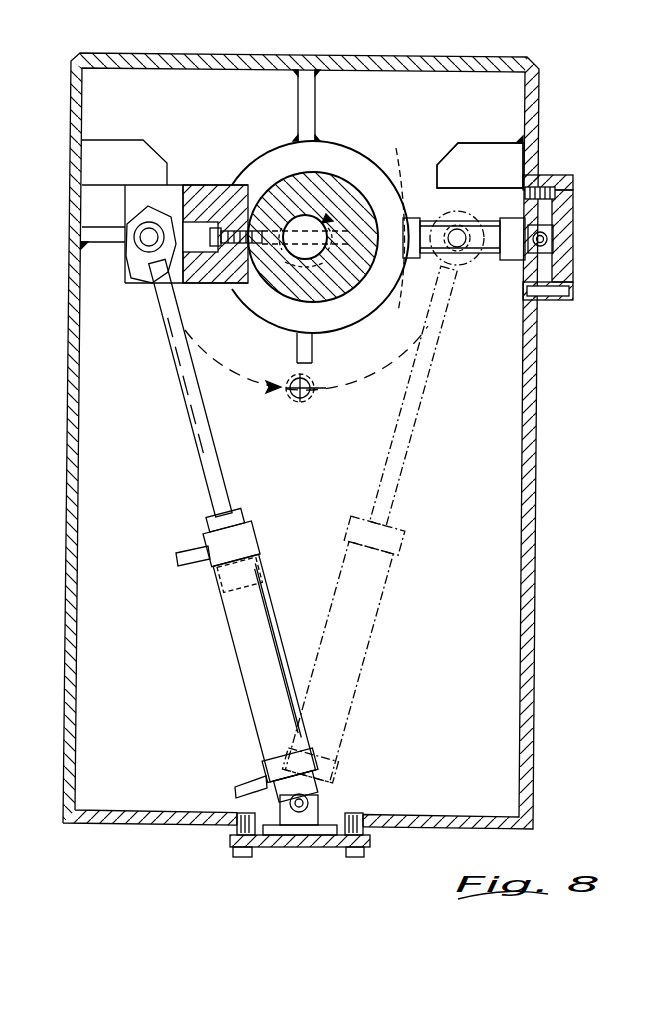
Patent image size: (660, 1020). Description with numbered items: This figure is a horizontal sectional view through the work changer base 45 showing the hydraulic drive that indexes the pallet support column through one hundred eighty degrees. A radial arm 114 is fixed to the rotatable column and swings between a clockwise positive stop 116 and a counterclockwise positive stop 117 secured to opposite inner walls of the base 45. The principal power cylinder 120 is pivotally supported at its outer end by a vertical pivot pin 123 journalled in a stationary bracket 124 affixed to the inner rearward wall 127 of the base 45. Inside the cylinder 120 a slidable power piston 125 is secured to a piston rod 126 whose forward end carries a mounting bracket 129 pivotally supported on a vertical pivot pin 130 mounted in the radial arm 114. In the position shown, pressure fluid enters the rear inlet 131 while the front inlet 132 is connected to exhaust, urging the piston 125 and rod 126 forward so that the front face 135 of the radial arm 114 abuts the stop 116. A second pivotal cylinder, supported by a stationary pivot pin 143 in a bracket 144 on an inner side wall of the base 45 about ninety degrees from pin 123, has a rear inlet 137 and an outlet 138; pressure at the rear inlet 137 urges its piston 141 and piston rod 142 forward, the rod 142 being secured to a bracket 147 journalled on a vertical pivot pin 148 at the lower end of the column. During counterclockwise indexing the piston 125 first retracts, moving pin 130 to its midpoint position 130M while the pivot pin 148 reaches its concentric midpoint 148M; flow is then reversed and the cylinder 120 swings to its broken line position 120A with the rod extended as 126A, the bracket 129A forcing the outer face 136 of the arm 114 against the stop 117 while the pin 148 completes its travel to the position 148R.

The work changer base 45 is at (538, 632).
The radial arm 114 is at (200, 186).
The positive stop 116 is at (100, 150).
The positive stop 117 is at (500, 150).
The power cylinder 120 is at (237, 618).
The broken line position of cylinder 120A is at (380, 603).
The vertical pivot pin 123 is at (298, 828).
The stationary bracket 124 is at (333, 812).
The power piston 125 is at (215, 572).
The piston rod 126 is at (200, 447).
The piston rod advanced position 126A is at (425, 452).
The inner rearward wall 127 is at (402, 826).
The mounting bracket 129 is at (153, 285).
The mounting bracket advanced position 129A is at (480, 165).
The vertical pivot pin 130 is at (140, 240).
The midpoint position of pivot pin 130M is at (300, 404).
The rear inlet 131 is at (248, 788).
The front inlet 132 is at (185, 553).
The front face 135 is at (173, 186).
The outer face 136 is at (191, 284).
The rear inlet 137 is at (497, 268).
The outlet 138 is at (403, 280).
The piston 141 is at (436, 209).
The piston rod 142 is at (388, 185).
The stationary pivot pin 143 is at (553, 232).
The bracket 144 is at (548, 254).
The bracket 147 is at (272, 200).
The vertical pivot pin 148 is at (262, 262).
The counterclockwise position of pivot pin 148R is at (329, 215).
The midpoint position of pivot pin 148M is at (282, 282).